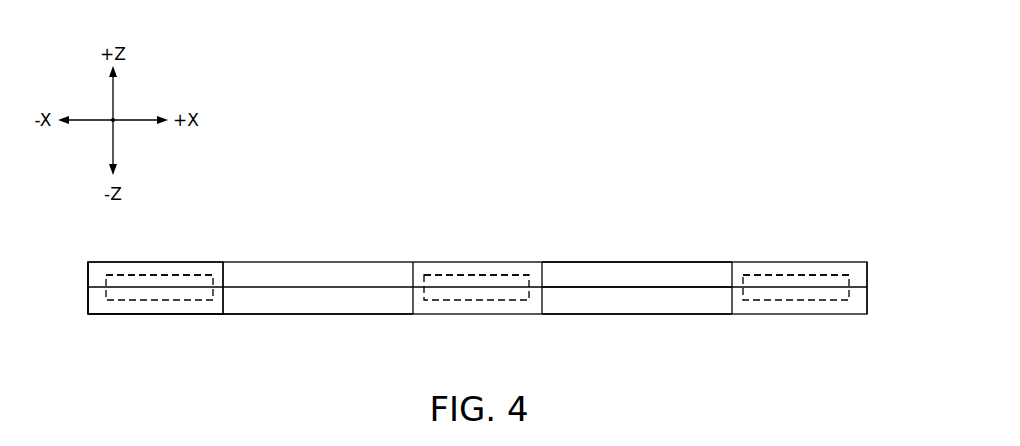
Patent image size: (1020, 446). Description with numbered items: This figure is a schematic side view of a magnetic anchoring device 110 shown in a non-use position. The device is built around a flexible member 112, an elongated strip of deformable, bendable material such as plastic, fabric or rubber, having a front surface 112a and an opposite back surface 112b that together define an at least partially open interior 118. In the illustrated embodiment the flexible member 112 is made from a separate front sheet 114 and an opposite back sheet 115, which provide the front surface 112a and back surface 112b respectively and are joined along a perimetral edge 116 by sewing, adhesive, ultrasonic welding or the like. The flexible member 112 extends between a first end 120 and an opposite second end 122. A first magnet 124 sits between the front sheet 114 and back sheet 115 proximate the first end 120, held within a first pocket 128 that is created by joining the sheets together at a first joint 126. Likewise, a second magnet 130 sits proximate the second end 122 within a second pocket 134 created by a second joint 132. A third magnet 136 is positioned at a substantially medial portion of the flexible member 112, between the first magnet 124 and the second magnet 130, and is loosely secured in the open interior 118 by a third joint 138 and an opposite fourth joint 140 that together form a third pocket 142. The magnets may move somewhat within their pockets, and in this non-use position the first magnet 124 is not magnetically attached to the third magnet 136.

The magnetic anchoring device 110 is at (477, 230).
The flexible member 112 is at (477, 226).
The front surface 112a is at (625, 262).
The back surface 112b is at (625, 315).
The front sheet 114 is at (110, 265).
The back sheet 115 is at (108, 308).
The perimetral edge 116 is at (560, 290).
The open interior 118 is at (350, 305).
The first end 120 is at (88, 287).
The second end 122 is at (867, 282).
The first magnet 124 is at (159, 274).
The first joint 126 is at (226, 307).
The first pocket 128 is at (197, 268).
The second magnet 130 is at (795, 273).
The second joint 132 is at (732, 307).
The second pocket 134 is at (758, 272).
The third magnet 136 is at (452, 275).
The third joint 138 is at (413, 305).
The fourth joint 140 is at (540, 305).
The third pocket 142 is at (515, 268).